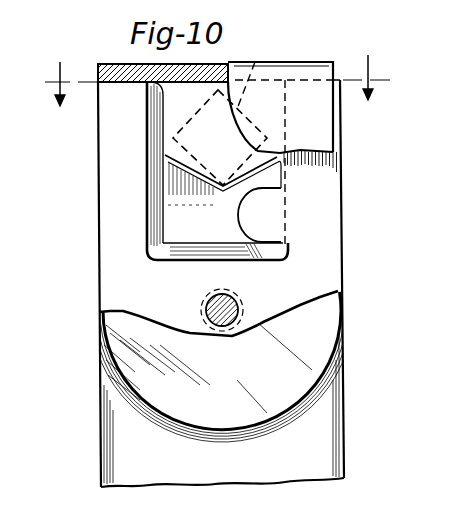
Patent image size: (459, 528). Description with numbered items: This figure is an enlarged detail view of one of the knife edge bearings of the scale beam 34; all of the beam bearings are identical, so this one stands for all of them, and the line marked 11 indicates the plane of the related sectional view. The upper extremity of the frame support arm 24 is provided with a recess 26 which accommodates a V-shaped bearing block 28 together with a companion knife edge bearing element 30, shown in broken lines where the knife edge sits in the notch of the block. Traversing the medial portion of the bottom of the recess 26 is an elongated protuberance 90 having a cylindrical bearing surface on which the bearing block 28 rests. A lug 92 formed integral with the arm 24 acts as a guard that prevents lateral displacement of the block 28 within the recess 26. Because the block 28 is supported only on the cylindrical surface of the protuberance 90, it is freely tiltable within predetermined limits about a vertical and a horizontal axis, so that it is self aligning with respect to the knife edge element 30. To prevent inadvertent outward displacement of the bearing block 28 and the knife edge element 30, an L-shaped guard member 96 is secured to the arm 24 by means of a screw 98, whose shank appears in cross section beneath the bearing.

The section line 11 is at (209, 80).
The support arm 24 is at (113, 442).
The recess 26 is at (177, 128).
The V-shaped bearing block 28 is at (177, 215).
The knife edge bearing element 30 is at (256, 62).
The scale beam 34 is at (158, 172).
The elongated protuberance 90 is at (213, 248).
The lug 92 is at (257, 205).
The L-shaped guard member 96 is at (320, 350).
The screw 98 is at (240, 298).